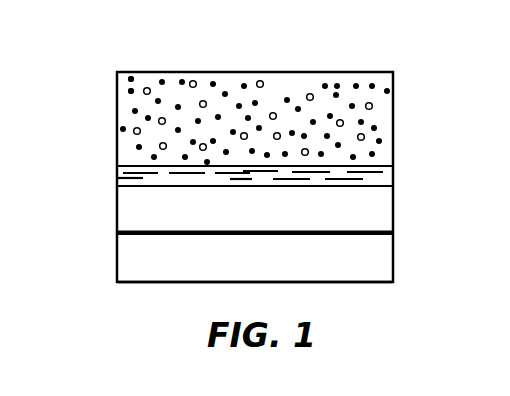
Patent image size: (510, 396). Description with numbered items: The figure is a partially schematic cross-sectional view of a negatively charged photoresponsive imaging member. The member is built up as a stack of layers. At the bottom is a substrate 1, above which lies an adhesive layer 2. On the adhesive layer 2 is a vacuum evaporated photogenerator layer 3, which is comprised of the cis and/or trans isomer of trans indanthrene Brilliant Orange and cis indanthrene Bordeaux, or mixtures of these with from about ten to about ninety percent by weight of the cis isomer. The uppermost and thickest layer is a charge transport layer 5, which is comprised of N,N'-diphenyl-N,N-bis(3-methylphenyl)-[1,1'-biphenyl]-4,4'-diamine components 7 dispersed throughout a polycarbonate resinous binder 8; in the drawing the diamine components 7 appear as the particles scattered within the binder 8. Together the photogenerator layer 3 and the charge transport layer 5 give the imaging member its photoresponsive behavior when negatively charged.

The substrate 1 is at (393, 235).
The adhesive layer 2 is at (380, 212).
The vacuum evaporated photogenerator layer 3 is at (393, 172).
The charge transport layer 5 is at (393, 122).
The N,N'-diphenyl-N,N-bis(3-methylphenyl)-[1,1'-biphenyl]-4,4'-diamine components 7 is at (128, 91).
The polycarbonate resinous binder 8 is at (193, 80).